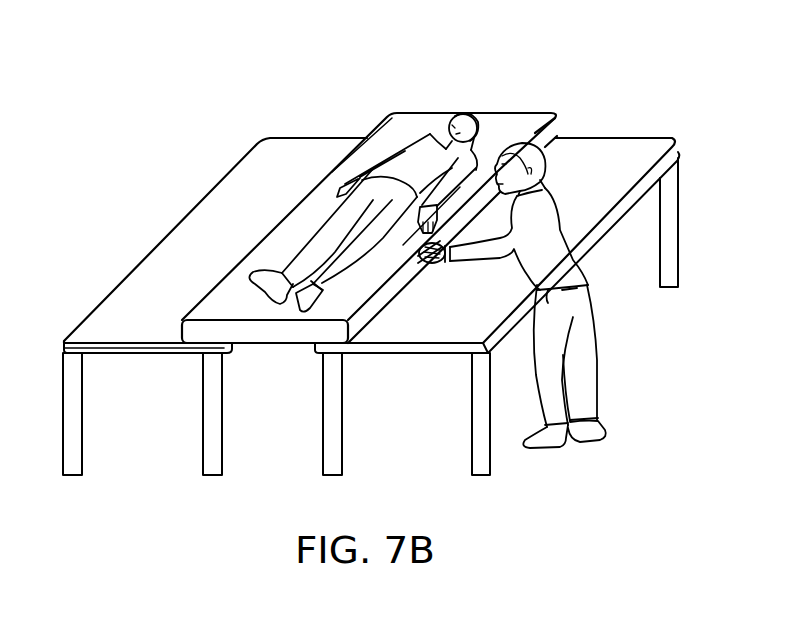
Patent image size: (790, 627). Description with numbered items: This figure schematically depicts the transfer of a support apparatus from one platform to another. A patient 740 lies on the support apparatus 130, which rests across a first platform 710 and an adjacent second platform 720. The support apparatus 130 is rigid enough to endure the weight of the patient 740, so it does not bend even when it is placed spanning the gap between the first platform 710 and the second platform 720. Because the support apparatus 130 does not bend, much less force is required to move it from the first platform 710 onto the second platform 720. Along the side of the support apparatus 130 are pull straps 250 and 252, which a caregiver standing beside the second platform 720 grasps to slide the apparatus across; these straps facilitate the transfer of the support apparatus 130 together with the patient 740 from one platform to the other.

The first platform 710 is at (233, 165).
The second platform 720 is at (631, 137).
The support apparatus 130 is at (521, 110).
The pull strap 250 is at (497, 188).
The pull strap 252 is at (421, 261).
The patient 740 is at (455, 115).